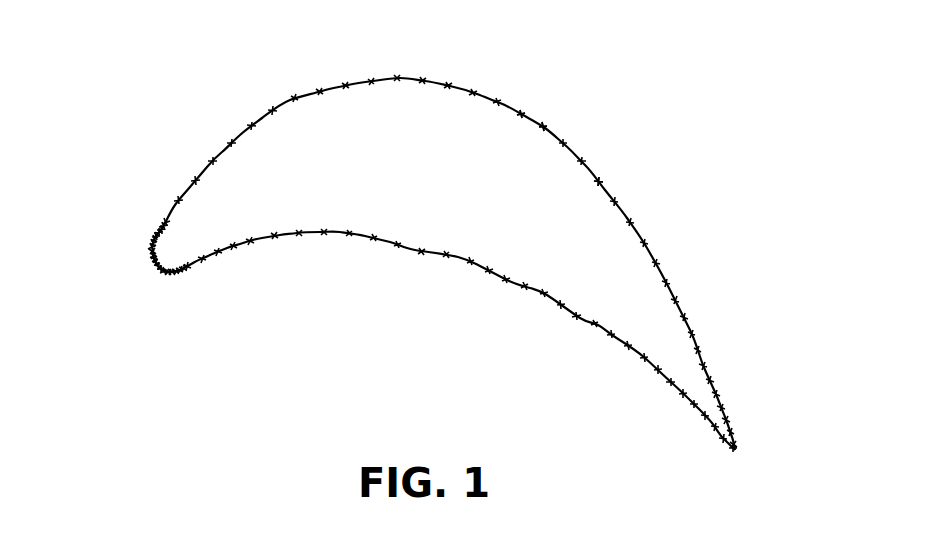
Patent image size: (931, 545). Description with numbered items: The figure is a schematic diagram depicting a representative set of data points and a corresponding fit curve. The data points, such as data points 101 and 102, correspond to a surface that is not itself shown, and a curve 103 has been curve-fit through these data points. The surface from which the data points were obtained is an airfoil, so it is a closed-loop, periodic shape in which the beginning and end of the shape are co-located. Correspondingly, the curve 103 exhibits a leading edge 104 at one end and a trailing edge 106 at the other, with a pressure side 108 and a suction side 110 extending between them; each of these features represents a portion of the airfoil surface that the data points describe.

The suction side 110 is at (516, 80).
The data point 101 is at (522, 112).
The data point 102 is at (541, 128).
The curve 103 is at (597, 172).
The leading edge 104 is at (139, 289).
The trailing edge 106 is at (750, 468).
The pressure side 108 is at (418, 278).